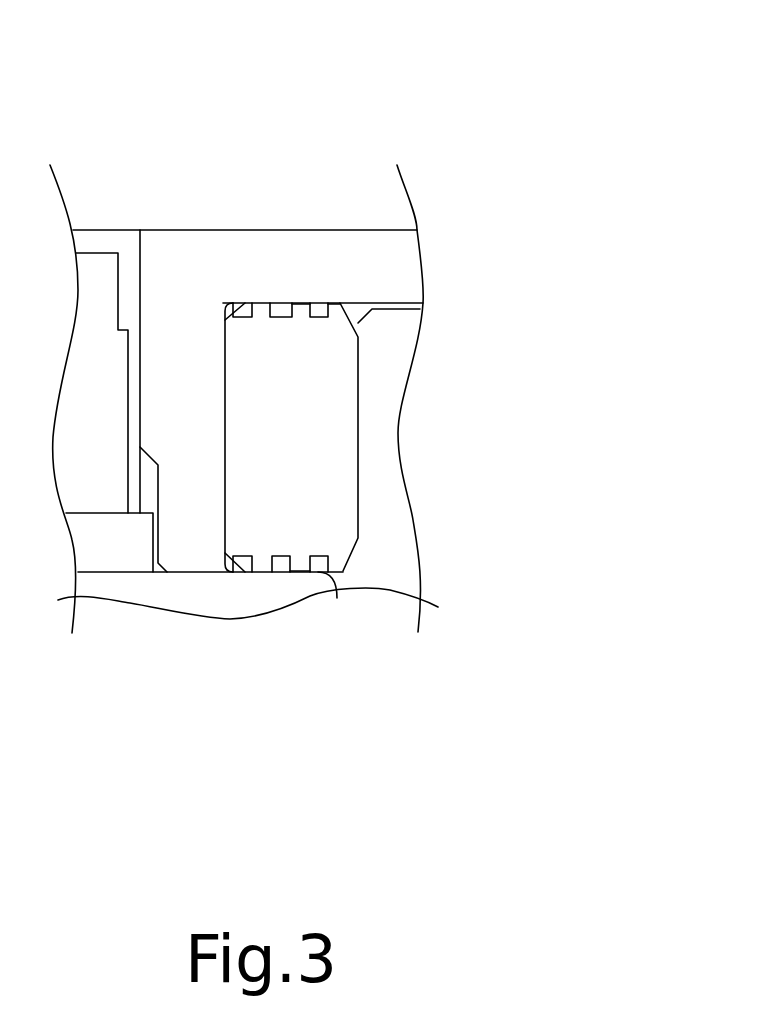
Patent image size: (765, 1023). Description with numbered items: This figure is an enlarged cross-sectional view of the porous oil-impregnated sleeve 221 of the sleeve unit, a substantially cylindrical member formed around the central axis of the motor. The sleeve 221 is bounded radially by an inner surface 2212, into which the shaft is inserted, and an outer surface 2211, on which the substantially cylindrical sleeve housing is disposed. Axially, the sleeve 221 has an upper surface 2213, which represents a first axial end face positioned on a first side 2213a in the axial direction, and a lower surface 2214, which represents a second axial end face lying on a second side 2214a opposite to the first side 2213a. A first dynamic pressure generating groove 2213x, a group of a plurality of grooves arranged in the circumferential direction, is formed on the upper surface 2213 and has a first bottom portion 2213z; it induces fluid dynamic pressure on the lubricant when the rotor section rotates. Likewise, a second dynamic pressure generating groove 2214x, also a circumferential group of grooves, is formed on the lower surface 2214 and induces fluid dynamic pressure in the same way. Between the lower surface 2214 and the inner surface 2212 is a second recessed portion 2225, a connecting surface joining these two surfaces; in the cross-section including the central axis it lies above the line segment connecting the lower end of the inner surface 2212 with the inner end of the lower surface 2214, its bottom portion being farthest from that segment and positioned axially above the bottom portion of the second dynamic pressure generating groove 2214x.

The sleeve 221 is at (318, 482).
The outer surface 2211 is at (358, 377).
The inner surface 2212 is at (223, 418).
The upper surface 2213 is at (280, 302).
The first side 2213a is at (298, 302).
The first dynamic pressure generating groove 2213x is at (320, 308).
The first bottom portion 2213z is at (327, 303).
The lower surface 2214 is at (278, 572).
The second side 2214a is at (292, 572).
The second dynamic pressure generating groove 2214x is at (315, 557).
The second recessed portion 2225 is at (232, 572).